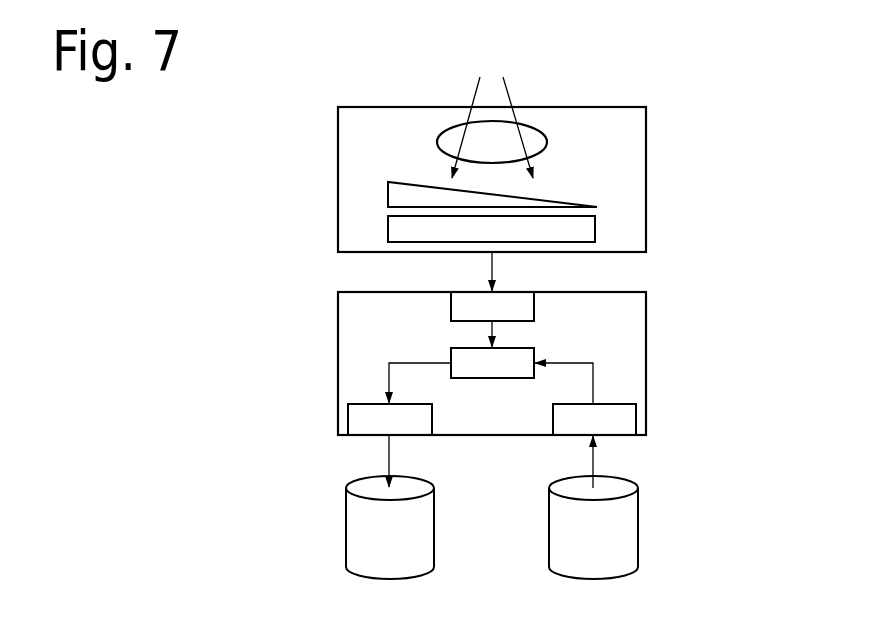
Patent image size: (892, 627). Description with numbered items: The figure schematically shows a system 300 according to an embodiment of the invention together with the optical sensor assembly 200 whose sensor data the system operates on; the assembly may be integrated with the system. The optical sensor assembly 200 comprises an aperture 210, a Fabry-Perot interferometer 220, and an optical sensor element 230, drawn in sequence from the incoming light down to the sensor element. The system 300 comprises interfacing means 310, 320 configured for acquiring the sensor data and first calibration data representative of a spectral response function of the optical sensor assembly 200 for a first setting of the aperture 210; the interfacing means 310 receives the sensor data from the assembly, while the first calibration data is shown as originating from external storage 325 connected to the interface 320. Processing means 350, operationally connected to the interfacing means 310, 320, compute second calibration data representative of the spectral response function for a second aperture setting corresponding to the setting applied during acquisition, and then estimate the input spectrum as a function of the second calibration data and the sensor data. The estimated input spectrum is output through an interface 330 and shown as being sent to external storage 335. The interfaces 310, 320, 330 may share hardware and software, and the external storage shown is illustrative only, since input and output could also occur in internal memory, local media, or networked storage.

The optical sensor assembly 200 is at (615, 127).
The aperture 210 is at (456, 127).
The Fabry-Perot interferometer 220 is at (398, 193).
The optical sensor element 230 is at (400, 227).
The system 300 is at (622, 303).
The interfacing means 310 is at (463, 311).
The interface 320 is at (618, 417).
The external storage 325 is at (618, 512).
The interface 330 is at (370, 422).
The external storage 335 is at (368, 509).
The processing means 350 is at (487, 371).